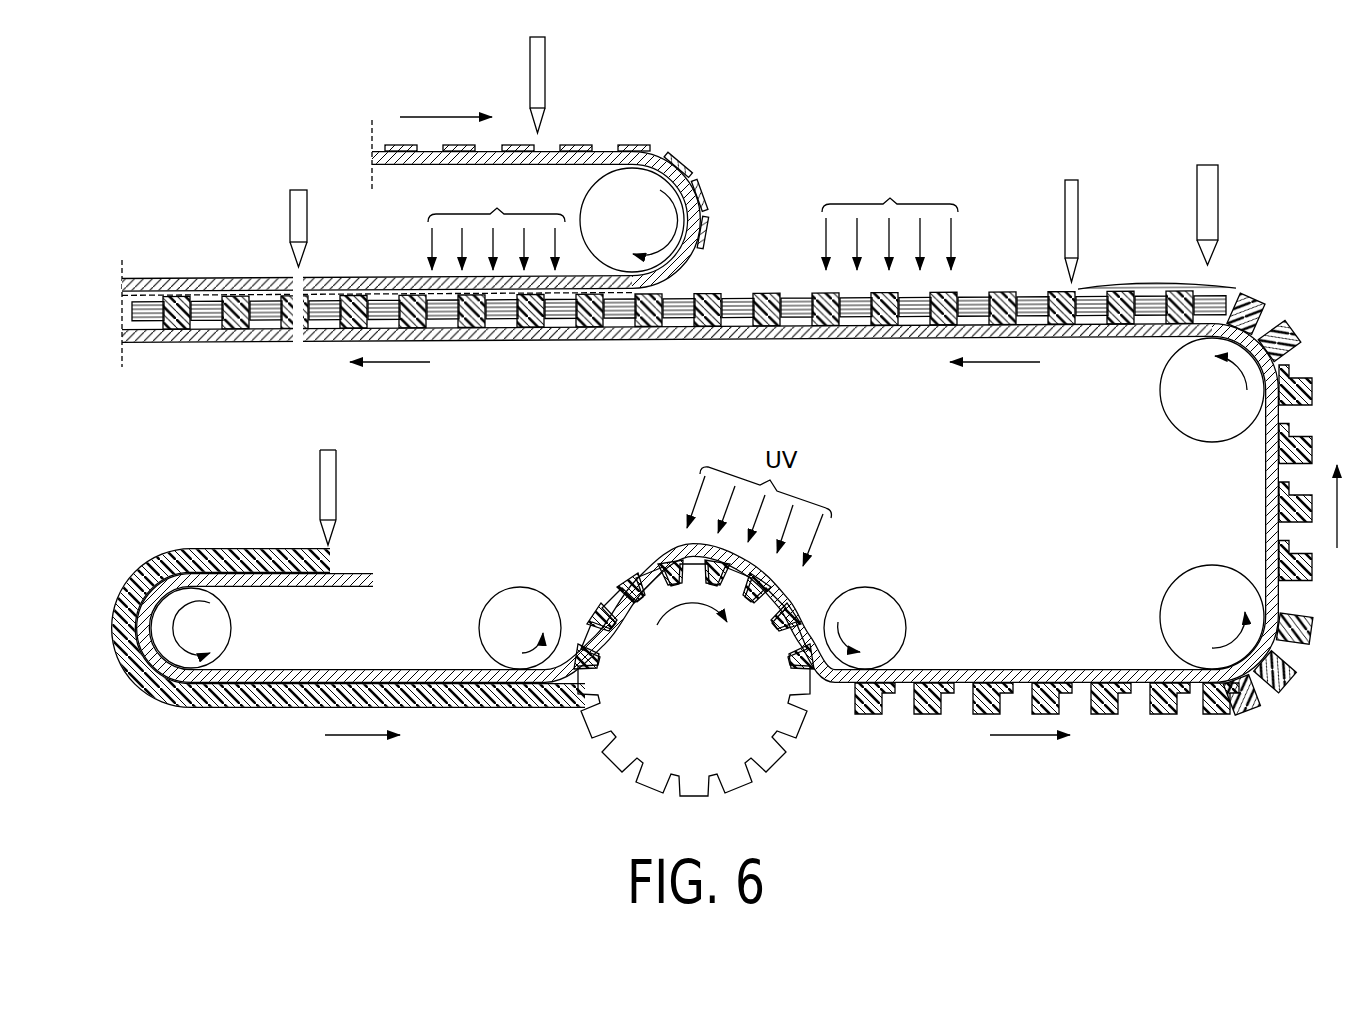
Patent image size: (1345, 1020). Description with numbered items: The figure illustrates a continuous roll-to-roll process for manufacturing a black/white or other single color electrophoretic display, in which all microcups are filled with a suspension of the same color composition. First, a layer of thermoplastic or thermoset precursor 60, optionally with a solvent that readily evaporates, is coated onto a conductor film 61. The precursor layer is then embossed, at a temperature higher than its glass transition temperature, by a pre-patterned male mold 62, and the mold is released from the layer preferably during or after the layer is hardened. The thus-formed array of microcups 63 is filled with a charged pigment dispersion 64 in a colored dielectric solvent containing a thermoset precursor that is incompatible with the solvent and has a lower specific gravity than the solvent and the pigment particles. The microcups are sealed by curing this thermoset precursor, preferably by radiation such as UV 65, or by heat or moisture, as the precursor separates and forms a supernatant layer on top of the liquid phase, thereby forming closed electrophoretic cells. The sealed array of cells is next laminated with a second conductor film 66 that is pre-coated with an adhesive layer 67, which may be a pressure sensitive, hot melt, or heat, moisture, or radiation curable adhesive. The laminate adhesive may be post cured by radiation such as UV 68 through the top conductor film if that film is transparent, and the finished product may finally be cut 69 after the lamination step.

The thermoplastic or thermoset precursor layer 60 is at (255, 709).
The conductor film 61 is at (320, 669).
The pre-patterned male mold 62 is at (608, 768).
The array of microcups 63 is at (1130, 712).
The charged pigment dispersion 64 is at (1212, 286).
The UV radiation 65 is at (960, 214).
The second conductor film 66 is at (690, 200).
The adhesive layer 67 is at (668, 152).
The UV radiation 68 is at (432, 246).
The cutting step 69 is at (290, 228).